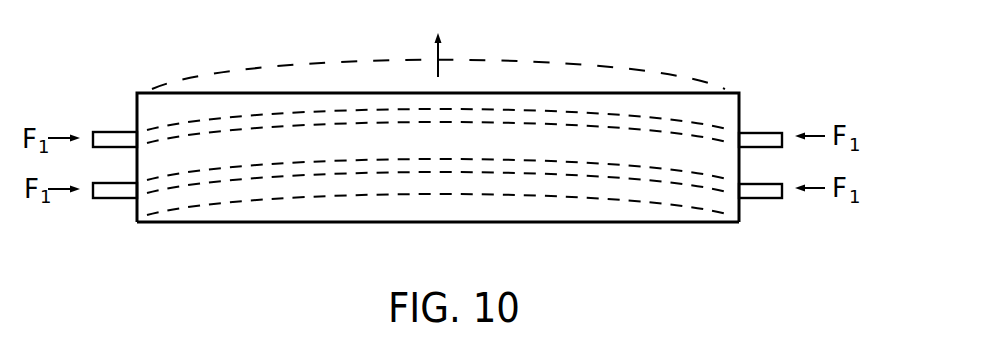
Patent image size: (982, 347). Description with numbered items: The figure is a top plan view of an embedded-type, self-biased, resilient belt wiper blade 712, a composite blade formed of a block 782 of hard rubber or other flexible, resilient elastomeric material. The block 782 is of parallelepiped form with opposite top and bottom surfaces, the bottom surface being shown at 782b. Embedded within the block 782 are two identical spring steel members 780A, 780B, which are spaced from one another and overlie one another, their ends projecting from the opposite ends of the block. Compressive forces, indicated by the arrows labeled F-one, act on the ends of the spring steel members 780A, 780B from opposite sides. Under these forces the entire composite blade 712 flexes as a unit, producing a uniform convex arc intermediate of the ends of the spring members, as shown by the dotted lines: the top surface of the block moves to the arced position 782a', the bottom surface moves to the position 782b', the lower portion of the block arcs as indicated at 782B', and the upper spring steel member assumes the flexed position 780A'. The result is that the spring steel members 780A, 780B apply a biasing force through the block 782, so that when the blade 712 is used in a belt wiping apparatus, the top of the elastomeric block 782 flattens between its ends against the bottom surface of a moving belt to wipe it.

The composite self-biased resilient belt wiper blade 712 is at (763, 109).
The block 782 is at (122, 110).
The flexed top surface of block 782a' is at (378, 46).
The bottom surface of block 782b is at (438, 250).
The flexed bottom surface of block 782b' is at (439, 231).
The flexed lower portion of block 782B' is at (439, 217).
The spring steel member 780A is at (802, 116).
The flexed position of spring steel member 780A' is at (439, 84).
The spring steel member 780B is at (765, 198).